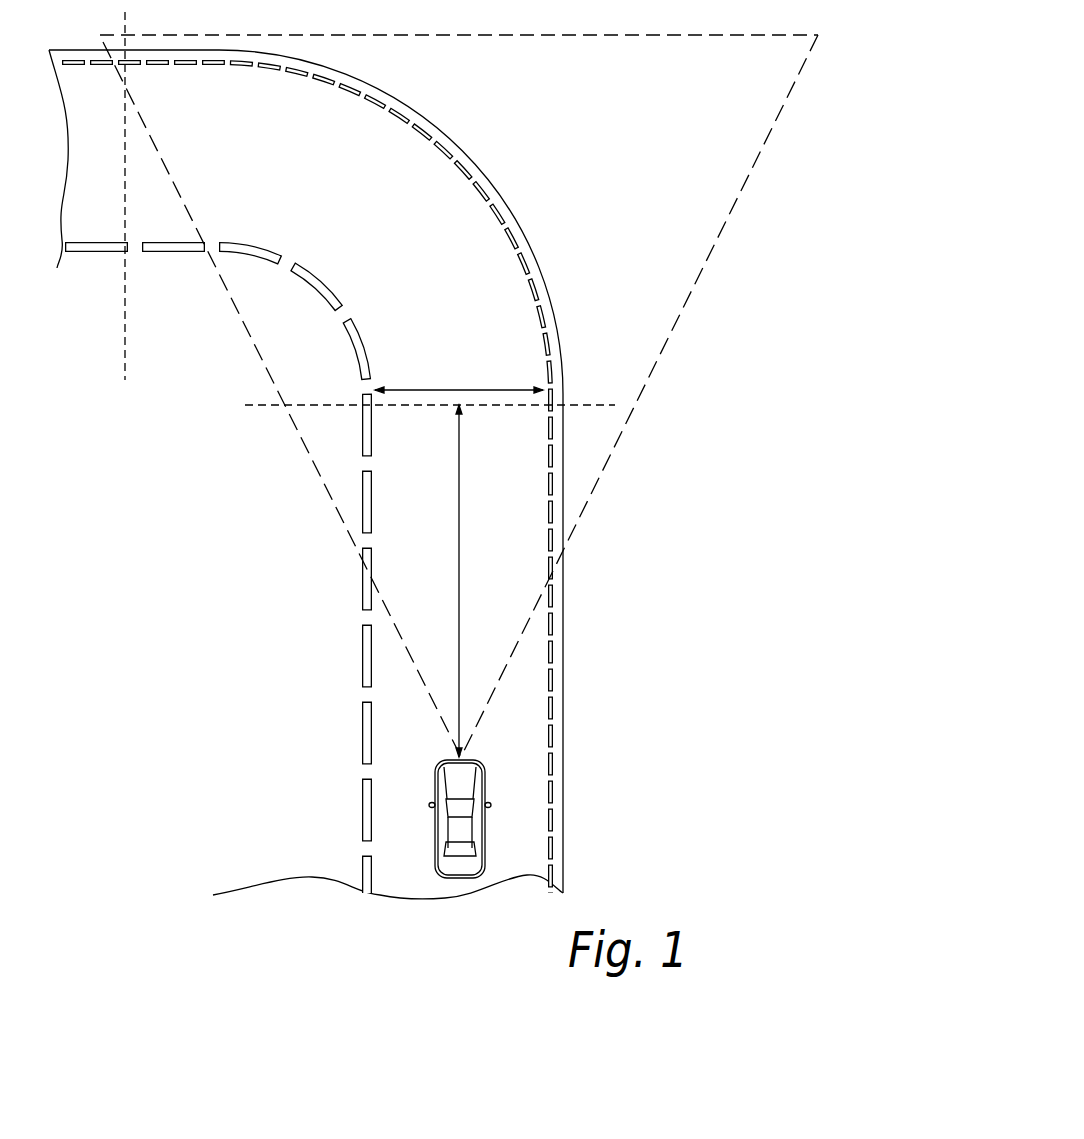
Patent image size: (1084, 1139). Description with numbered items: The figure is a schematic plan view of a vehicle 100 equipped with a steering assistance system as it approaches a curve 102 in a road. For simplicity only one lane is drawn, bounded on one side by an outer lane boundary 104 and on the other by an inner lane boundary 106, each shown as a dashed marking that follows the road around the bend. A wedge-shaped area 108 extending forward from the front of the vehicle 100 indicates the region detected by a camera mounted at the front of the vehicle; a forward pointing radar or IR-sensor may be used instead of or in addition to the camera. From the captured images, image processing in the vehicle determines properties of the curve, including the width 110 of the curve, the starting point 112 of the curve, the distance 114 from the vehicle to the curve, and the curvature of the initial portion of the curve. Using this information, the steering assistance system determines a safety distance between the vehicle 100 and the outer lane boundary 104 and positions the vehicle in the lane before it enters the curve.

The vehicle 100 is at (484, 827).
The curve 102 is at (306, 474).
The outer lane boundary 104 is at (550, 640).
The inner lane boundary 106 is at (362, 713).
The area detected by camera 108 is at (703, 272).
The width of the curve 110 is at (447, 388).
The starting point of the curve 112 is at (590, 403).
The distance to the curve 114 is at (461, 560).